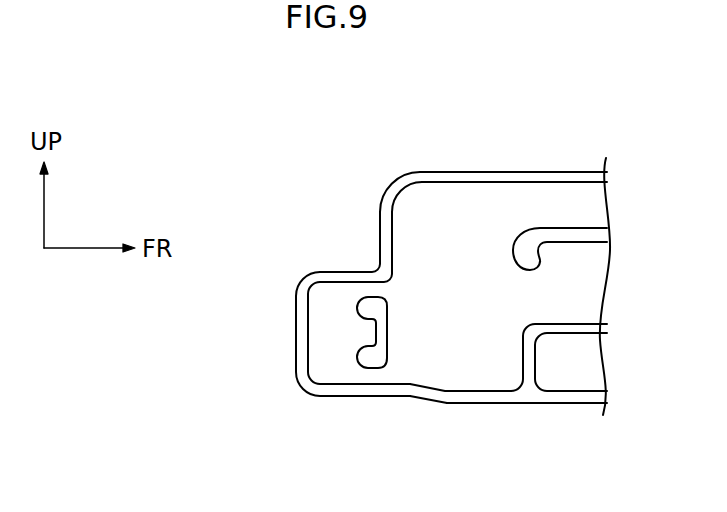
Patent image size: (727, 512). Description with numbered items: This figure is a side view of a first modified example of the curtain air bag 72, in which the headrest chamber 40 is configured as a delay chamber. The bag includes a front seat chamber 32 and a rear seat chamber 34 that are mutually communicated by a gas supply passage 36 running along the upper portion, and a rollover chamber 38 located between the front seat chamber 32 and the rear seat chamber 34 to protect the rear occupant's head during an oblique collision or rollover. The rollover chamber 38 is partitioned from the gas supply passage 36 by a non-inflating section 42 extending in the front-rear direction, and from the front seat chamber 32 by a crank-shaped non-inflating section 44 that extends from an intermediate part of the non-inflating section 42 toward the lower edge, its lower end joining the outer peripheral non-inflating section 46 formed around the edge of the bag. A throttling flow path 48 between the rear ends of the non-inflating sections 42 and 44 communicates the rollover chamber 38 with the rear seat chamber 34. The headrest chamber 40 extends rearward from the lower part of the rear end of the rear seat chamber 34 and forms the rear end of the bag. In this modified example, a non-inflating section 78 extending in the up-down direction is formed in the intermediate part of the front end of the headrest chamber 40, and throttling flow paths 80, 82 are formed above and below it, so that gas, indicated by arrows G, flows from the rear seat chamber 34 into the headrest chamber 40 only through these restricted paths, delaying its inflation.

The front seat chamber 32 is at (573, 381).
The rear seat chamber 34 is at (465, 222).
The gas supply passage 36 is at (567, 197).
The rollover chamber 38 is at (597, 263).
The headrest chamber 40 is at (318, 332).
The non-inflating section 42 is at (568, 235).
The crank-shaped non-inflating section 44 is at (583, 322).
The outer peripheral non-inflating section 46 is at (405, 192).
The throttling flow path 48 is at (535, 282).
The curtain air bag 72 is at (465, 403).
The non-inflating section 78 is at (390, 318).
The throttling flow path 80 is at (373, 293).
The throttling flow path 82 is at (372, 376).
The arrows G is at (388, 292).